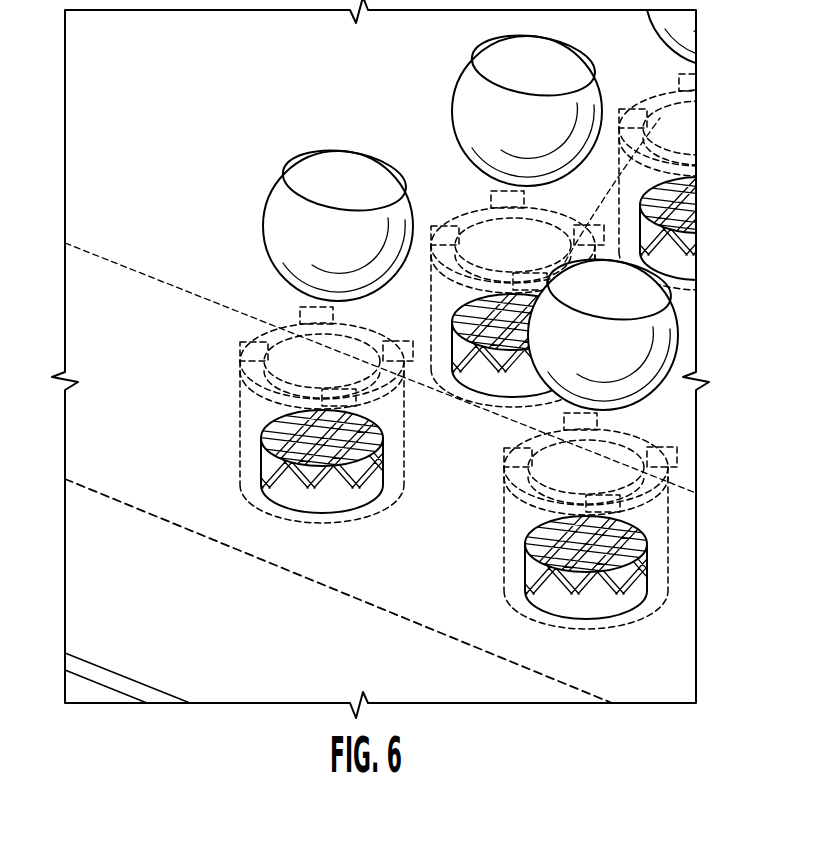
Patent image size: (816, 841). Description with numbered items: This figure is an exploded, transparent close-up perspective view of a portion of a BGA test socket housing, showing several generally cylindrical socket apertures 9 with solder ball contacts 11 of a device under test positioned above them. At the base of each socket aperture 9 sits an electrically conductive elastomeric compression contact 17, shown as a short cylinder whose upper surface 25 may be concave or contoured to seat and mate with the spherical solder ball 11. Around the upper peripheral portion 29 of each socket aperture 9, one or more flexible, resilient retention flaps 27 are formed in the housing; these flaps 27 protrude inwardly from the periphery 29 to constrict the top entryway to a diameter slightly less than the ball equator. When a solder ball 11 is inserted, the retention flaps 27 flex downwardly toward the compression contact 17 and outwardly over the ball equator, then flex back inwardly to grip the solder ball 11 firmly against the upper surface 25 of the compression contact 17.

The socket aperture 9 is at (652, 533).
The solder ball contact 11 is at (288, 210).
The electrically conductive compression contact 17 is at (288, 487).
The upper surface of the elastomeric contact 25 is at (296, 446).
The flexible retention flap 27 is at (247, 387).
The upper peripheral portion of the socket aperture 29 is at (645, 168).